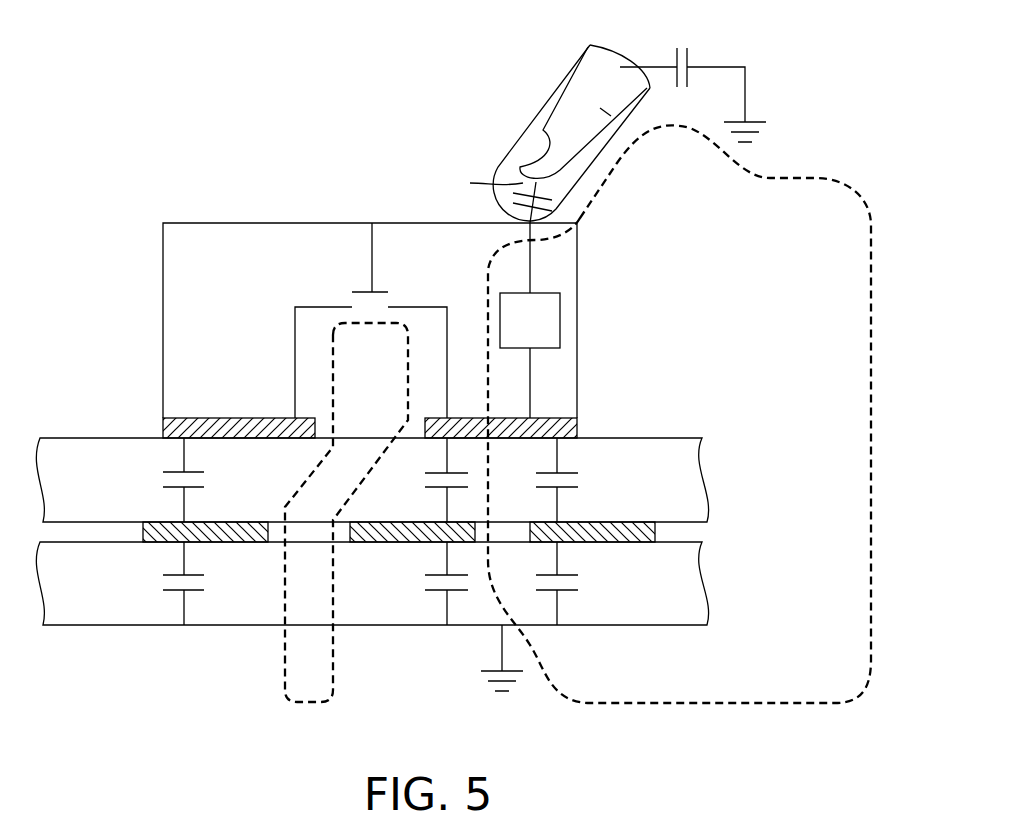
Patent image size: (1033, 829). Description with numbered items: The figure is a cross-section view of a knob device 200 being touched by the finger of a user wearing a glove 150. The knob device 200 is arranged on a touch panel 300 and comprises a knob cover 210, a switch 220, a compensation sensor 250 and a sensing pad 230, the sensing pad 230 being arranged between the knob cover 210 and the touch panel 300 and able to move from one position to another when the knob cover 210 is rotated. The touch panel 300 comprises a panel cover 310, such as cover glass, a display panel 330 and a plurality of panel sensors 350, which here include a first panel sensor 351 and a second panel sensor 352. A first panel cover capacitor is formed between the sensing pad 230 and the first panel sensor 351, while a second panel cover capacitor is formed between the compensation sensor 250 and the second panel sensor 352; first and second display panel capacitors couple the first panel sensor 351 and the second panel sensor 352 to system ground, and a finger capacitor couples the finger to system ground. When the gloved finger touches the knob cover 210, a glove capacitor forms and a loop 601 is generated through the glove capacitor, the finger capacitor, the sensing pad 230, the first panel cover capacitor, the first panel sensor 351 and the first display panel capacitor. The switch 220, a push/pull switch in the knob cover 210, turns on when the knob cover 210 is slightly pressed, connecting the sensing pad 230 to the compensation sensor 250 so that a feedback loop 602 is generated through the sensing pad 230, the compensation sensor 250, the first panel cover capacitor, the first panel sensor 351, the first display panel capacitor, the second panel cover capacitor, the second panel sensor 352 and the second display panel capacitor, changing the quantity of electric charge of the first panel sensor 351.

The knob device 200 is at (237, 159).
The knob cover 210 is at (293, 223).
The switch 220 is at (371, 258).
The sensing pad 230 is at (577, 427).
The compensation sensor 250 is at (163, 430).
The glove 150 is at (530, 135).
The touch panel 300 is at (777, 462).
The panel cover 310 is at (702, 476).
The display panel 330 is at (702, 579).
The panel sensors 350 is at (628, 540).
The first panel sensor 351 is at (373, 537).
The second panel sensor 352 is at (248, 537).
The loop 601 is at (700, 705).
The feedback loop 602 is at (305, 705).